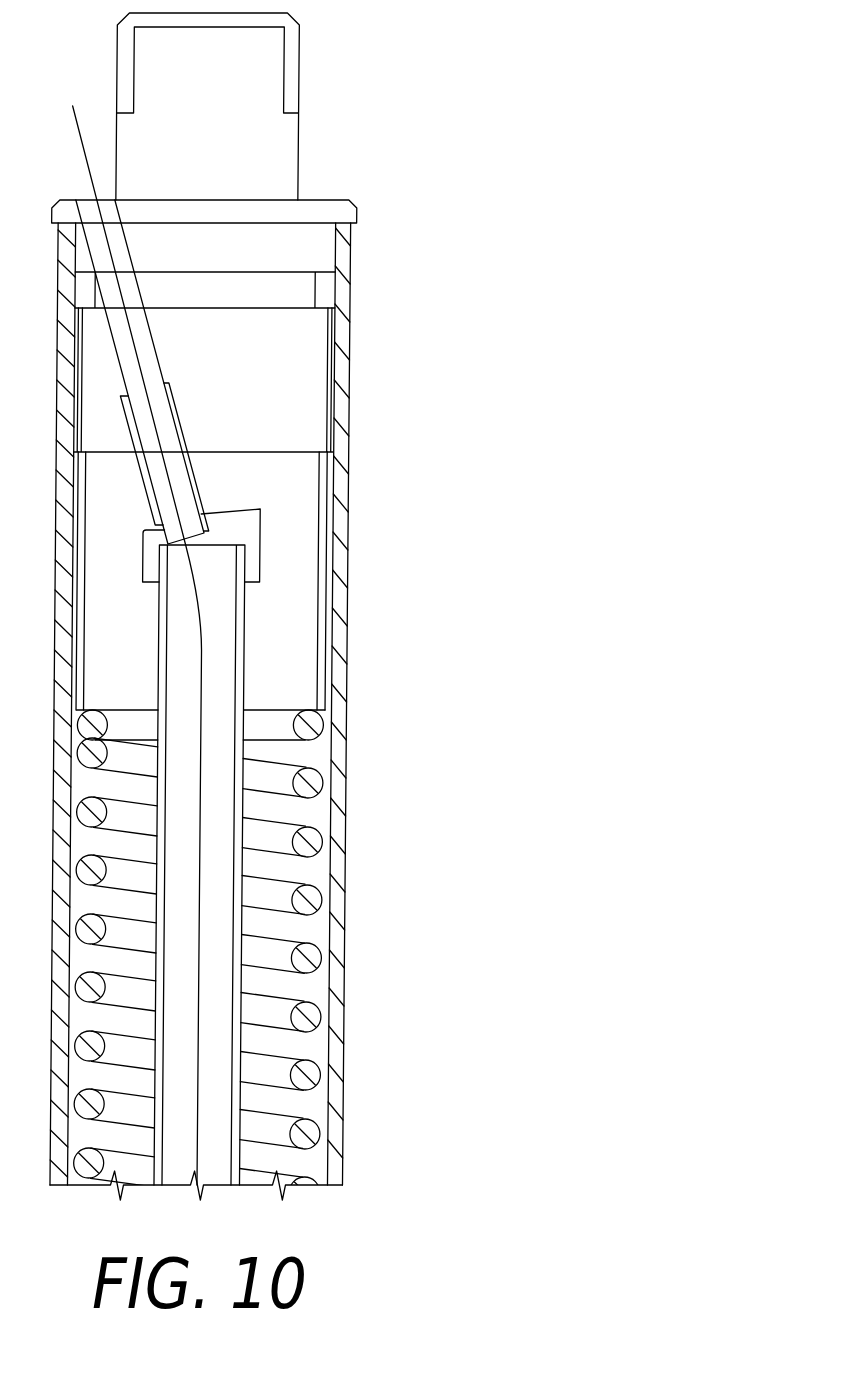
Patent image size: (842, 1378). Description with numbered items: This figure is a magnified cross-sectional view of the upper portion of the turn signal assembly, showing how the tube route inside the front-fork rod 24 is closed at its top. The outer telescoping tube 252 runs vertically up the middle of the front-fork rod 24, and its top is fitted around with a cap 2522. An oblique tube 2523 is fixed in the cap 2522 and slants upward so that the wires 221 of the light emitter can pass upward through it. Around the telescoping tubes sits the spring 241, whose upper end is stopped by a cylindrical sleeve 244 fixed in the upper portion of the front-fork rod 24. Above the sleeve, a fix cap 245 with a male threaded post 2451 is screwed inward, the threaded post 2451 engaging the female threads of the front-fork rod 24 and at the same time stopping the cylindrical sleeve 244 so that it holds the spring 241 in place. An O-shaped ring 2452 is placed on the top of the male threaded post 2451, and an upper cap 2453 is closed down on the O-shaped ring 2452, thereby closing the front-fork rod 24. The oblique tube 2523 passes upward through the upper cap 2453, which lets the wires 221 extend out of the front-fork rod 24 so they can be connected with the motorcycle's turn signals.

The front-fork rod 24 is at (335, 975).
The spring 241 is at (308, 899).
The cylindrical sleeve 244 is at (322, 587).
The fix cap 245 is at (328, 138).
The male threaded post 2451 is at (327, 382).
The O-shaped ring 2452 is at (325, 292).
The upper cap 2453 is at (315, 215).
The outer telescoping tube 252 is at (240, 1078).
The cap 2522 is at (242, 525).
The oblique tube 2523 is at (190, 476).
The wires 221 is at (203, 657).